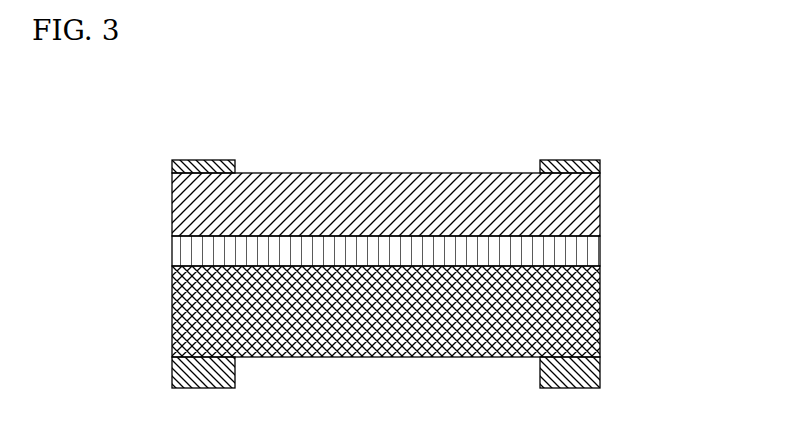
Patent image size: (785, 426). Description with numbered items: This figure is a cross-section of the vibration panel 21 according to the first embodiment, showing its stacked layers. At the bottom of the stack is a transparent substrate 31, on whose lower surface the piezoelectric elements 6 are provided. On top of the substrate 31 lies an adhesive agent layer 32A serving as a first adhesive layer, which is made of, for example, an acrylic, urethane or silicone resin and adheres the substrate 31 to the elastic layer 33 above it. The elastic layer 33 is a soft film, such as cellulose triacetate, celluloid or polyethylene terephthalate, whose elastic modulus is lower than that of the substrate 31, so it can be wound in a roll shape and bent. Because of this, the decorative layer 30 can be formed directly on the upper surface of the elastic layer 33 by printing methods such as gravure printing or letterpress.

The vibration panel 21 is at (384, 89).
The elastic layer 33 is at (587, 206).
The adhesive agent layer 32A is at (587, 253).
The substrate 31 is at (590, 311).
The decorative layer 30 is at (172, 163).
The piezoelectric element 6 is at (173, 371).